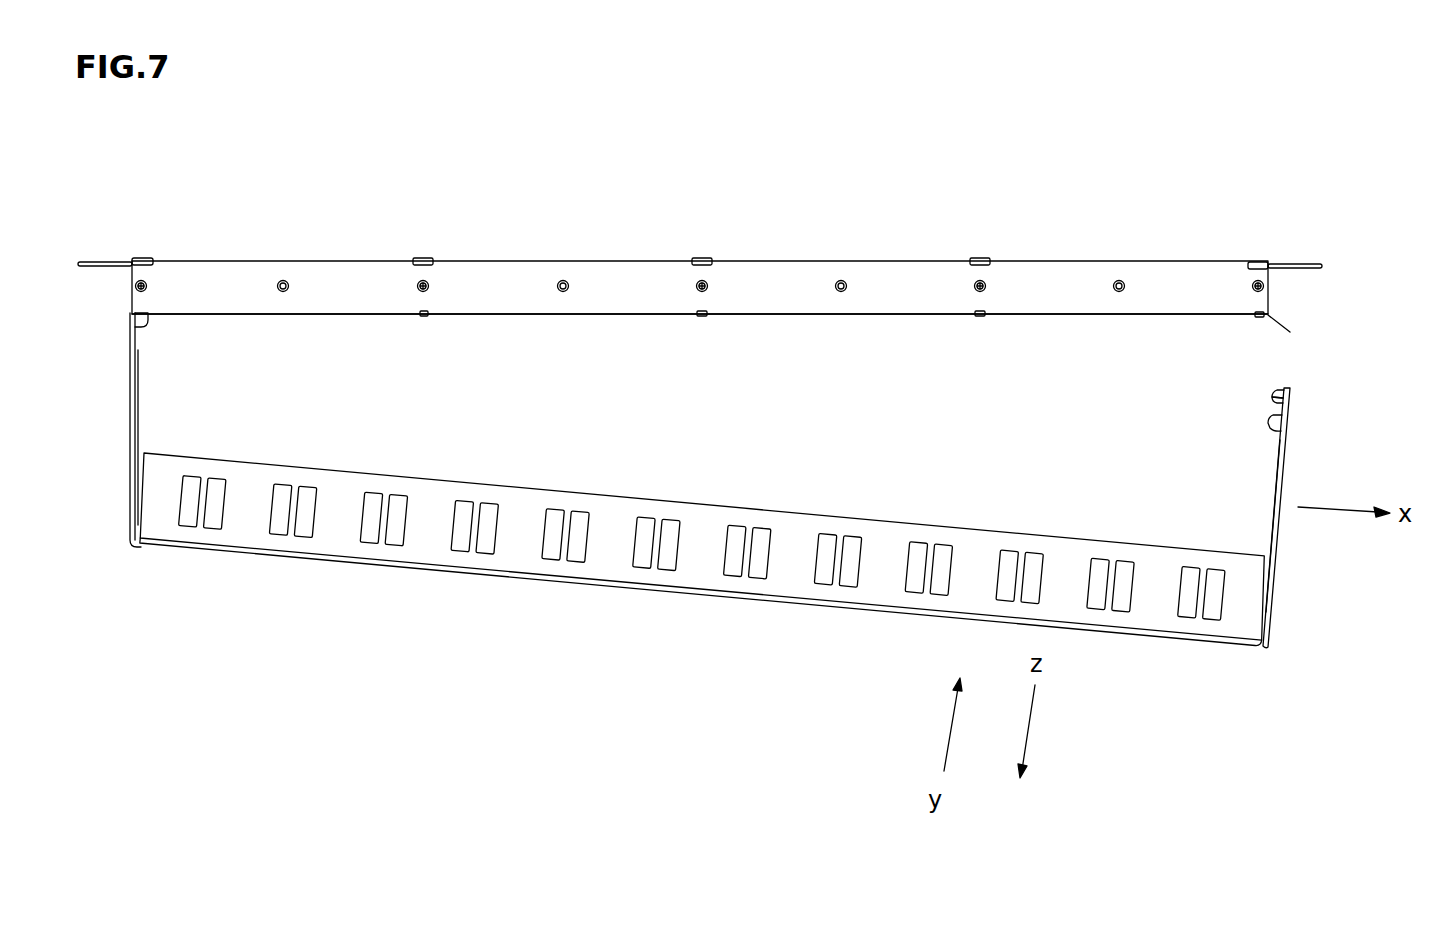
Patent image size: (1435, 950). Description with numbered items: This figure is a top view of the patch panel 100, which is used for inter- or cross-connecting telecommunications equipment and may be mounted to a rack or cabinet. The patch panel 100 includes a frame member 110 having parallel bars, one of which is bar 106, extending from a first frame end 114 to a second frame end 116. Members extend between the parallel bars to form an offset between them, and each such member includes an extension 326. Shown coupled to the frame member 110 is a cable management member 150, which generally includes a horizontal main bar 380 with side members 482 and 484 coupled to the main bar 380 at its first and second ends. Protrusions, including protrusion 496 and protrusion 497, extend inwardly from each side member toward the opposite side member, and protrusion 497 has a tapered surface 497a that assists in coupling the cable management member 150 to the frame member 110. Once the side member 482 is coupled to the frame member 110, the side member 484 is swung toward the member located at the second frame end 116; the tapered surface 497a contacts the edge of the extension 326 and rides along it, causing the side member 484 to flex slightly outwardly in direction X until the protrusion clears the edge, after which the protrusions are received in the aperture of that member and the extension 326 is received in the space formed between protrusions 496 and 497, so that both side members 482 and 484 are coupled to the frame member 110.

The patch panel 100 is at (1055, 172).
The frame member 110 is at (754, 281).
The bar 106 is at (868, 301).
The first frame end 114 is at (141, 282).
The second frame end 116 is at (1259, 277).
The extension 326 is at (1288, 332).
The side member 482 is at (133, 413).
The side member 484 is at (1286, 449).
The tapered surface 497a is at (1276, 392).
The protrusion 497 is at (1272, 399).
The protrusion 496 is at (1270, 428).
The cable management member 150 is at (686, 566).
The main bar 380 is at (878, 583).